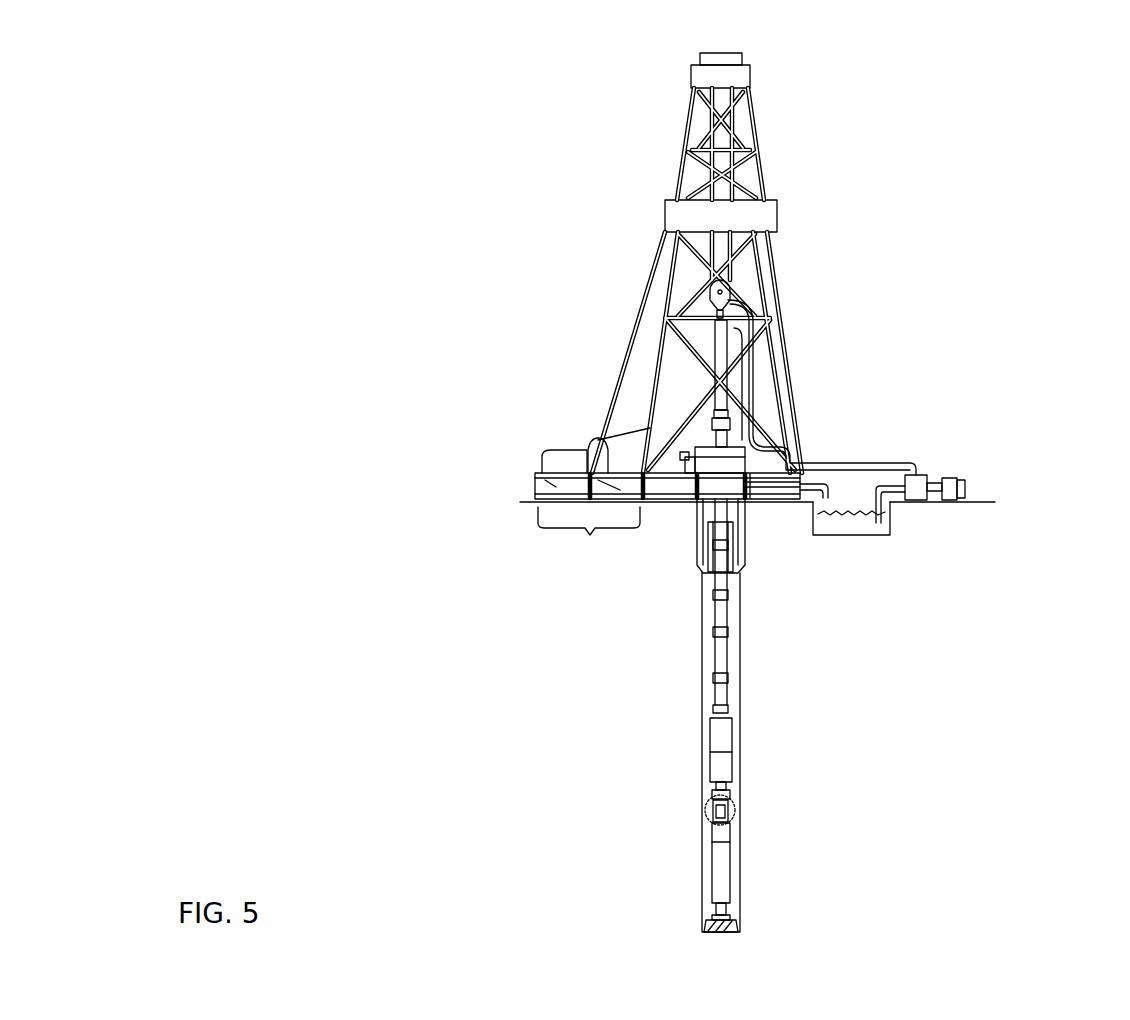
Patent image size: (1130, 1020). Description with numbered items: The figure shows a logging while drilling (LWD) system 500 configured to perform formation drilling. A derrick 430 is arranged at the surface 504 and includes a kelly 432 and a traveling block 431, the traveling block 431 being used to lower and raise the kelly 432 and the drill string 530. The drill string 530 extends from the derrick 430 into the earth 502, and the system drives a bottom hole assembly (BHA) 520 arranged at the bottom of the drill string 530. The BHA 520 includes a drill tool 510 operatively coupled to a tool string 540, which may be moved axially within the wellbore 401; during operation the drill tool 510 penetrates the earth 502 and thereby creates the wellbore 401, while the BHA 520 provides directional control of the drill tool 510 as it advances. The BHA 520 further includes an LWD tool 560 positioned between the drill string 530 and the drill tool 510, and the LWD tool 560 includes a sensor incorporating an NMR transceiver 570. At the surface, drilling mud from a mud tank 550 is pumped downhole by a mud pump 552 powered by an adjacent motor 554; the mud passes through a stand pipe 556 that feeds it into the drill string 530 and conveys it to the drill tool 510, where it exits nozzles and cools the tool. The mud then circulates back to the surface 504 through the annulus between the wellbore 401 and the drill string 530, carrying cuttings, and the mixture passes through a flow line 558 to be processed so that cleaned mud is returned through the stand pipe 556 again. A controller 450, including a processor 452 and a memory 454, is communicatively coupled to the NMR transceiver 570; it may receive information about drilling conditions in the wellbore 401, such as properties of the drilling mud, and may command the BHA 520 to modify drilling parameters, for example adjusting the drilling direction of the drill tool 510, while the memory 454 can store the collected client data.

The logging while drilling (LWD) system 500 is at (113, 62).
The derrick 430 is at (663, 300).
The traveling block 431 is at (735, 296).
The kelly 432 is at (718, 348).
The stand pipe 556 is at (762, 380).
The surface 504 is at (530, 500).
The processor 452 is at (535, 470).
The memory 454 is at (598, 445).
The controller 450 is at (589, 545).
The flow line 558 is at (832, 488).
The mud pump 552 is at (913, 476).
The motor 554 is at (962, 490).
The mud tank 550 is at (848, 538).
The wellbore 401 is at (700, 605).
The drill string 530 is at (722, 650).
The earth 502 is at (504, 719).
The LWD tool 560 is at (735, 793).
The NMR transceiver 570 is at (735, 810).
The bottom hole assembly (BHA) 520 is at (632, 803).
The tool string 540 is at (722, 860).
The drill tool 510 is at (742, 931).